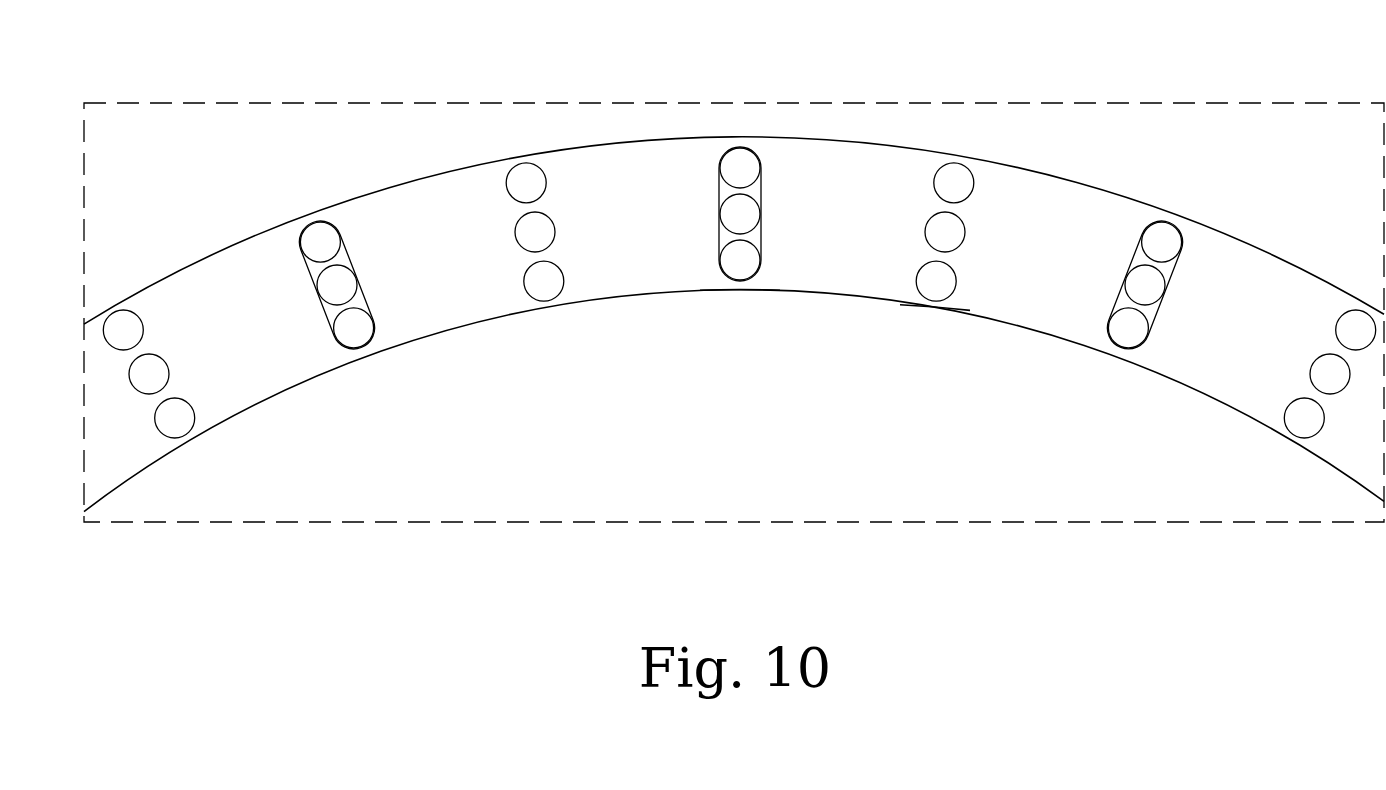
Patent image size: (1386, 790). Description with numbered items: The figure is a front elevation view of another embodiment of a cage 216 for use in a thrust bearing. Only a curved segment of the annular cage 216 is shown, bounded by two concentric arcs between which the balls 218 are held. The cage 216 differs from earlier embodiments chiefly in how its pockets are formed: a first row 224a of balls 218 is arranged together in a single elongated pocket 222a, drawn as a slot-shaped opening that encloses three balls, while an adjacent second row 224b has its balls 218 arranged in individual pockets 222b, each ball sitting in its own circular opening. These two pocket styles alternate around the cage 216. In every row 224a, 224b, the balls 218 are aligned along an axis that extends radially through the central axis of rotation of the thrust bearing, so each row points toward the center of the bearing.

The cage 216 is at (1180, 184).
The balls 218 is at (709, 205).
The elongated pocket 222a is at (720, 243).
The individual pockets 222b is at (973, 188).
The first row 224a is at (740, 309).
The second row 224b is at (933, 319).